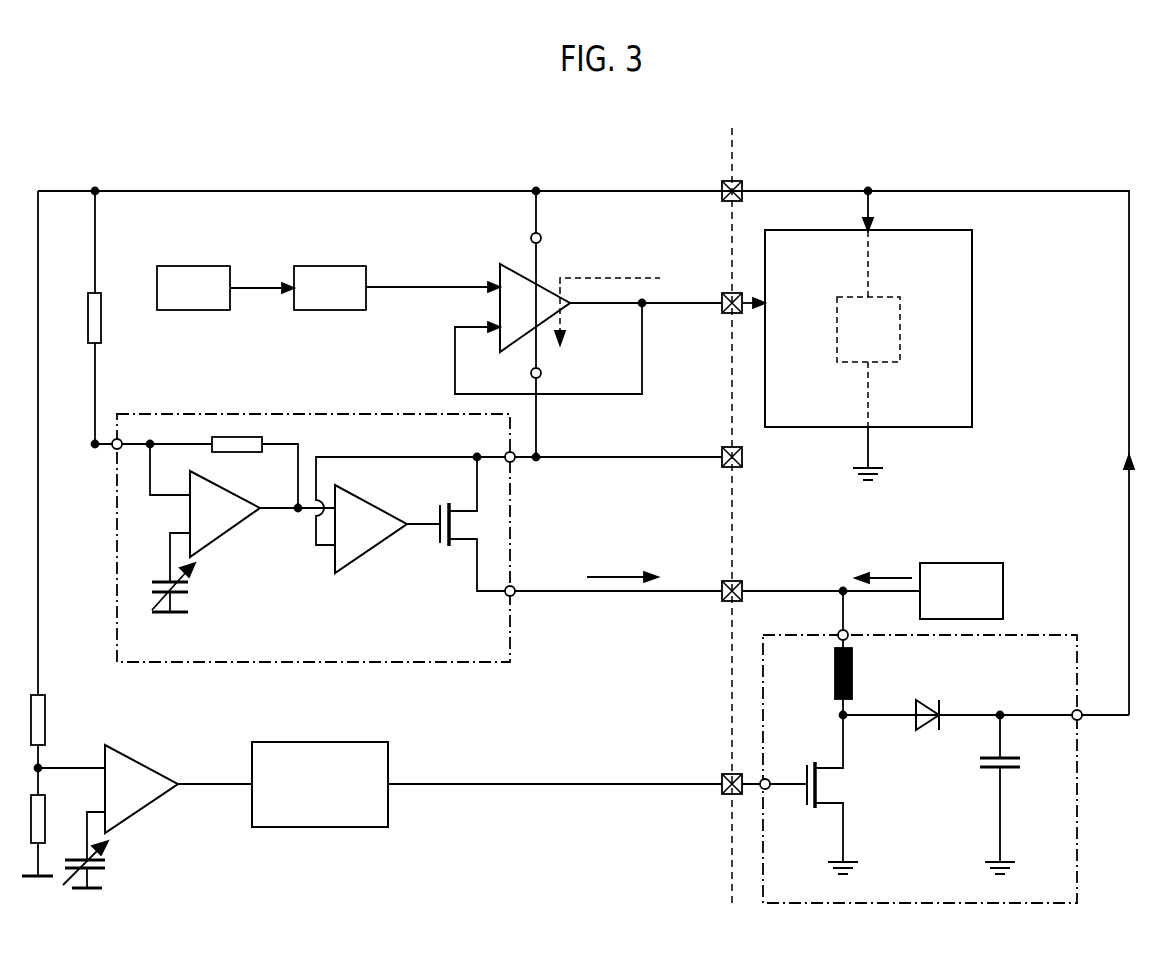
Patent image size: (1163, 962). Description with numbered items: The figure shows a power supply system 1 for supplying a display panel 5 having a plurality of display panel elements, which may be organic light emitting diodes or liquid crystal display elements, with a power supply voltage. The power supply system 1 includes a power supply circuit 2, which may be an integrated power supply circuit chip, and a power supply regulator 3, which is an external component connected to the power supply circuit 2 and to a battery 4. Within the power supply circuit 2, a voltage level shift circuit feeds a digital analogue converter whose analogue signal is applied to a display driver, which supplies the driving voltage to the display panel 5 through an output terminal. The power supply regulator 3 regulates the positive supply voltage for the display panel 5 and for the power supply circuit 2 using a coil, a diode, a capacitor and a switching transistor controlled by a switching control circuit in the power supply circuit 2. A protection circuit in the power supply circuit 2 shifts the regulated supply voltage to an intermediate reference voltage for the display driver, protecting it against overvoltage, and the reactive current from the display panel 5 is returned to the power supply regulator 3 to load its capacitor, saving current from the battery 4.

The power supply system 1 is at (761, 149).
The power supply circuit 2 is at (372, 508).
The power supply regulator 3 is at (1080, 797).
The battery 4 is at (1005, 590).
The display panel 5 is at (973, 333).